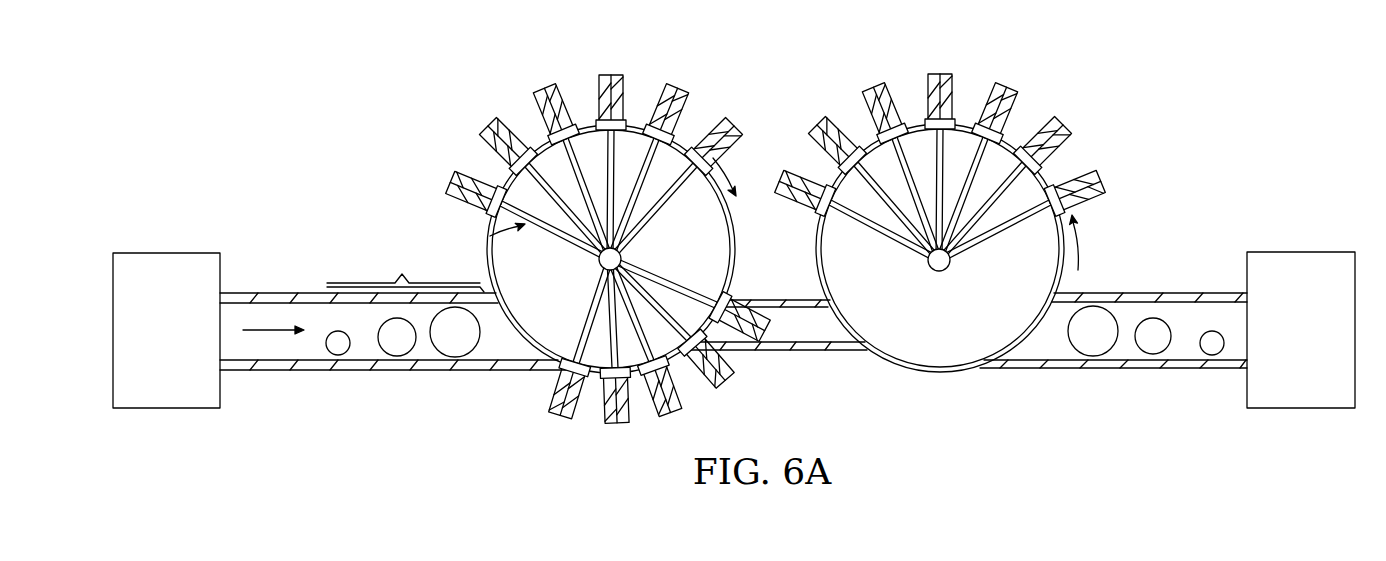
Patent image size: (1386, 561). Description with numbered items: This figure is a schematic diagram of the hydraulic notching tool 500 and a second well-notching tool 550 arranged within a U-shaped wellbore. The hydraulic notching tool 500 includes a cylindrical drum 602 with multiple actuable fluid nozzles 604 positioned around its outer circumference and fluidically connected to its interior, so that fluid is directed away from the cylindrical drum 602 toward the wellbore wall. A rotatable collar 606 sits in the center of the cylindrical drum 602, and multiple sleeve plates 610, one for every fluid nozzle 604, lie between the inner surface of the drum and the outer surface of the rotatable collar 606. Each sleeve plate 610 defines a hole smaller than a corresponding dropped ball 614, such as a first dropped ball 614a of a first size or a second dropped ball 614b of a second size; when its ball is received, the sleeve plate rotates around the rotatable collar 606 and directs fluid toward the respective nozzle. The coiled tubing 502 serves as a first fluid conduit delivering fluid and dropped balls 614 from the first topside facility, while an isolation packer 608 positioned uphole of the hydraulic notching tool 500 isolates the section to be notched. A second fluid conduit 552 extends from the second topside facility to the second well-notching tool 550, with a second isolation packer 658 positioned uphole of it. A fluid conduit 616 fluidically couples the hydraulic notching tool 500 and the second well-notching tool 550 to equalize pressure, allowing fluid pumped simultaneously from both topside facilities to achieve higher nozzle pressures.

The hydraulic notching tool 500 is at (611, 223).
The second well-notching tool 550 is at (1058, 85).
The coiled tubing 502 is at (287, 293).
The second fluid conduit 552 is at (1172, 293).
The cylindrical drum 602 is at (738, 232).
The fluid nozzle 604 is at (605, 75).
The rotatable collar 606 is at (598, 266).
The isolation packer 608 is at (165, 253).
The sleeve plate 610 is at (492, 238).
The dropped ball 614 is at (414, 333).
The first dropped ball 614a is at (474, 350).
The second dropped ball 614b is at (378, 344).
The fluid conduit 616 is at (773, 336).
The second isolation packer 658 is at (1300, 252).